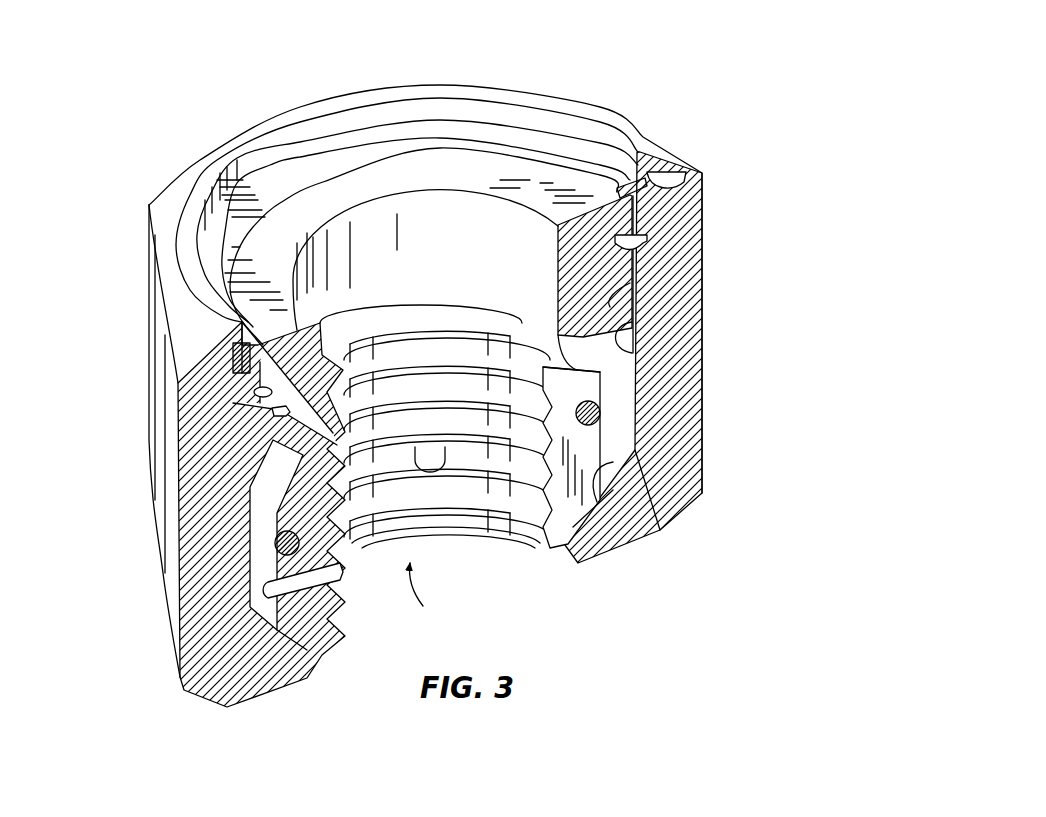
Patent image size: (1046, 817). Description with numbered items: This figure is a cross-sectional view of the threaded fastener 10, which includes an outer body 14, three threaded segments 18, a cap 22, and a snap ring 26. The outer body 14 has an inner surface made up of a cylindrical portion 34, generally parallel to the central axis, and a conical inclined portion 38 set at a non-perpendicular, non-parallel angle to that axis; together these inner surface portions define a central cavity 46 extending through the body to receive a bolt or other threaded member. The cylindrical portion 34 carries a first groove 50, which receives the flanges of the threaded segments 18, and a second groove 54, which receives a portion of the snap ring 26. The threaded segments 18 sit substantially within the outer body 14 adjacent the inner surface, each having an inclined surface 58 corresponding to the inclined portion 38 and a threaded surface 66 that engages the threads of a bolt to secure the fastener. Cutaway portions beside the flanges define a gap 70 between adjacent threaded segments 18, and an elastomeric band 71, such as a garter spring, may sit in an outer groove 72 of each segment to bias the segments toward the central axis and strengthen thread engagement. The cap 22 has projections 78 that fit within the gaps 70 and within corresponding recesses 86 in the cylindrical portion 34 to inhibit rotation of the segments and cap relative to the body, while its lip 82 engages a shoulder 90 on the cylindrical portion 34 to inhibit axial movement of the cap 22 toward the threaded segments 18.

The threaded fastener 10 is at (600, 60).
The outer body 14 is at (207, 600).
The threaded segments 18 is at (536, 522).
The cap 22 is at (452, 163).
The snap ring 26 is at (297, 158).
The cylindrical portion 34 is at (620, 252).
The inclined portion 38 is at (587, 510).
The central cavity 46 is at (427, 597).
The first groove 50 is at (262, 427).
The second groove 54 is at (663, 183).
The inclined surface 58 is at (585, 515).
The threaded surface 66 is at (452, 492).
The gap 70 is at (560, 362).
The elastomeric band 71 is at (600, 413).
The outer groove 72 is at (272, 548).
The projections 78 is at (600, 290).
The lip 82 is at (247, 347).
The recesses 86 is at (613, 357).
The shoulder 90 is at (250, 348).